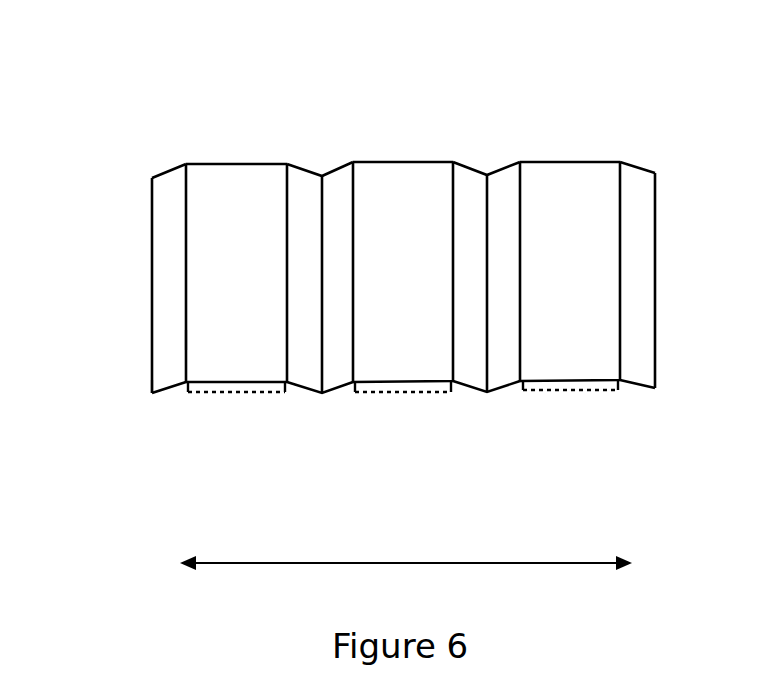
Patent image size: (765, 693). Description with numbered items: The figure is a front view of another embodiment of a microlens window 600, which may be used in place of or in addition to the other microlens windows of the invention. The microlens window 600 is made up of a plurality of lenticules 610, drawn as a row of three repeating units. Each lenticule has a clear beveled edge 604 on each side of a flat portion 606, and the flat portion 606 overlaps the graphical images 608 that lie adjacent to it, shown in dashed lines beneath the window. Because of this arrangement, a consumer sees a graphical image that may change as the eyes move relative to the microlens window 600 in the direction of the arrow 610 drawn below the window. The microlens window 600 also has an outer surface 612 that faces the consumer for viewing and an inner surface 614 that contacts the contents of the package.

The microlens window 600 is at (385, 287).
The clear beveled edge 604 is at (307, 183).
The flat portion 606 is at (222, 185).
The graphical images 608 is at (238, 395).
The lenticules 610 is at (190, 132).
The outer surface 612 is at (186, 340).
The inner surface 614 is at (138, 393).